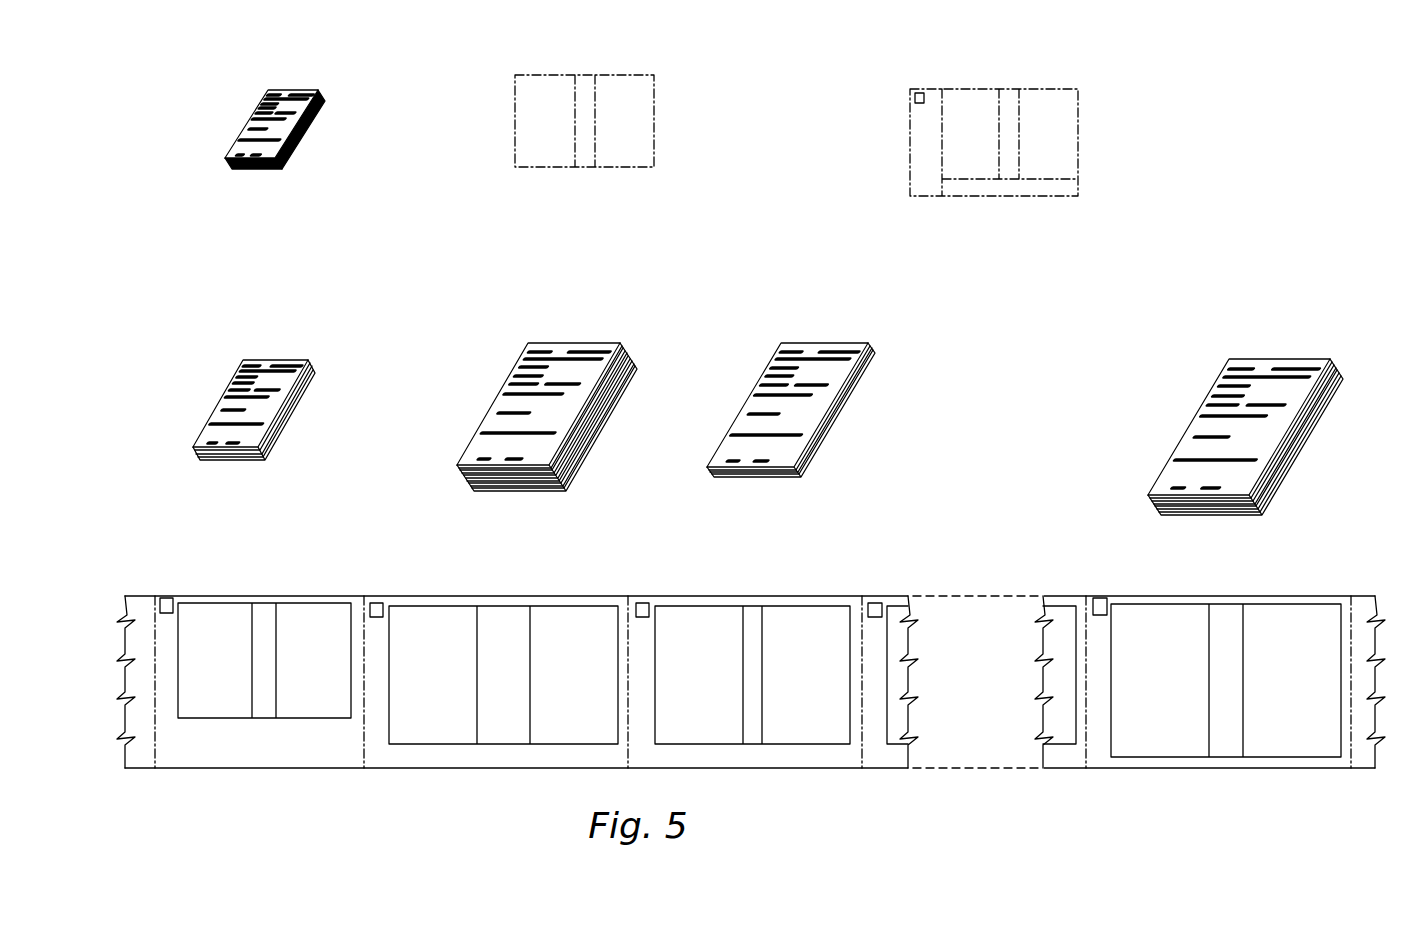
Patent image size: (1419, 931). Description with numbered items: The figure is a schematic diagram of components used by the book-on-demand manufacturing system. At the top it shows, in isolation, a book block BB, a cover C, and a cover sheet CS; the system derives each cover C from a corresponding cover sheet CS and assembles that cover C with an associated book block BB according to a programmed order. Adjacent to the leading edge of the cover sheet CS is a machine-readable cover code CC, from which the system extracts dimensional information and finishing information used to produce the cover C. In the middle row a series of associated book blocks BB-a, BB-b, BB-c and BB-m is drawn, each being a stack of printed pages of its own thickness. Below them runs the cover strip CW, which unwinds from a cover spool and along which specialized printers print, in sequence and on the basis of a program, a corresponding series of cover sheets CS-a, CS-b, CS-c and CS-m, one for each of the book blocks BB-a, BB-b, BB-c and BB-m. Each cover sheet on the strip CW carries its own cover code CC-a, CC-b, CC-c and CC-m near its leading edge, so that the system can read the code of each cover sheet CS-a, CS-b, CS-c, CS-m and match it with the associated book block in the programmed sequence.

The book block BB is at (310, 84).
The cover C is at (670, 77).
The cover code CC is at (919, 93).
The cover sheet CS is at (1095, 110).
The book block BB-a is at (292, 345).
The book block BB-b is at (591, 335).
The book block BB-c is at (829, 333).
The book block BB-m is at (1291, 345).
The cover code CC-a is at (174, 598).
The cover sheet CS-a is at (302, 613).
The cover code CC-b is at (382, 603).
The cover sheet CS-b is at (575, 618).
The cover code CC-c is at (644, 603).
The cover sheet CS-c is at (797, 615).
The cover code CC-m is at (1101, 605).
The cover sheet CS-m is at (1272, 618).
The cover strip CW is at (1361, 758).